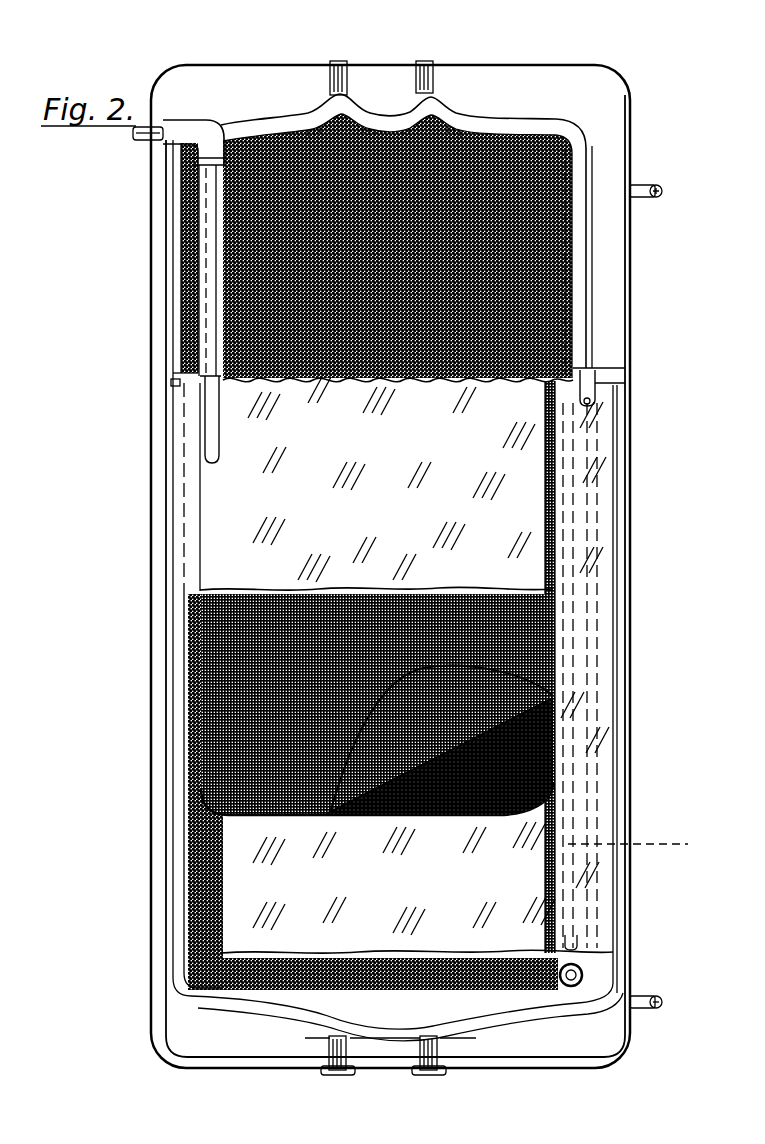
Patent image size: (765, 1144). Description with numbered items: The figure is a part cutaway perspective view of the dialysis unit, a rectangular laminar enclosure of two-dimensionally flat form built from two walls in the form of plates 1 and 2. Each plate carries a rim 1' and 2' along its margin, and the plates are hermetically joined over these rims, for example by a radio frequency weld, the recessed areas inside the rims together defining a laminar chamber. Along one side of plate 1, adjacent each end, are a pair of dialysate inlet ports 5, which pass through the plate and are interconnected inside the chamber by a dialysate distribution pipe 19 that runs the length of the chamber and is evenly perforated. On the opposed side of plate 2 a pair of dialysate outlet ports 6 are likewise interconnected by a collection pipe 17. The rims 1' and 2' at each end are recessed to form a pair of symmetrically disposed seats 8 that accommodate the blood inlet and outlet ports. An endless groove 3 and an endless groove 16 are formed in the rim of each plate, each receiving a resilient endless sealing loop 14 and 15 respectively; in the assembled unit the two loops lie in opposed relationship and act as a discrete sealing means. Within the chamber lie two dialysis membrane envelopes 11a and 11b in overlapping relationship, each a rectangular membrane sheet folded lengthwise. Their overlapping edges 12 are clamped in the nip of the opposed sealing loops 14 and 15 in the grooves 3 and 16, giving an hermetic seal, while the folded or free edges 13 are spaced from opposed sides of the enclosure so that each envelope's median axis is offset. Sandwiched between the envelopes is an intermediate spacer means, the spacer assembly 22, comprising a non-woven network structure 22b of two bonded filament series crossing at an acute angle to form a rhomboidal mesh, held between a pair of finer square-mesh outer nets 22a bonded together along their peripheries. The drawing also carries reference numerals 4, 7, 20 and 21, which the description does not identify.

The plate 1 is at (411, 591).
The rim 1' is at (414, 576).
The plate 2 is at (428, 536).
The rim 2' is at (420, 197).
The endless groove 3 is at (165, 207).
The granular filter material 4 is at (462, 217).
The dialysate inlet ports 5 is at (638, 190).
The dialysate outlet ports 6 is at (128, 126).
The conduit 7 is at (197, 275).
The seats 8 is at (336, 97).
The dialysis membrane envelope 11a is at (480, 482).
The dialysis membrane envelope 11b is at (270, 867).
The overlapping edges 12 is at (192, 582).
The folded edges 13 is at (540, 581).
The sealing loop 14 is at (588, 383).
The sealing loop 15 is at (523, 1003).
The endless groove 16 is at (583, 430).
The collection pipe 17 is at (203, 407).
The dialysate distribution pipe 19 is at (646, 853).
The tube 20 is at (202, 437).
The filter layer 21 is at (290, 965).
The spacer assembly 22 is at (245, 657).
The outer nets 22a is at (452, 705).
The non-woven network structure 22b is at (520, 729).